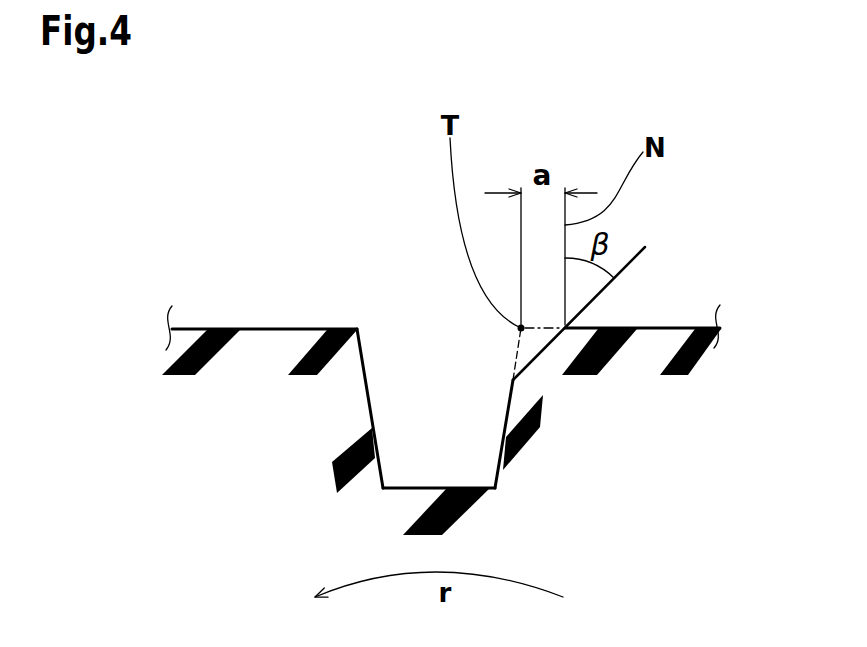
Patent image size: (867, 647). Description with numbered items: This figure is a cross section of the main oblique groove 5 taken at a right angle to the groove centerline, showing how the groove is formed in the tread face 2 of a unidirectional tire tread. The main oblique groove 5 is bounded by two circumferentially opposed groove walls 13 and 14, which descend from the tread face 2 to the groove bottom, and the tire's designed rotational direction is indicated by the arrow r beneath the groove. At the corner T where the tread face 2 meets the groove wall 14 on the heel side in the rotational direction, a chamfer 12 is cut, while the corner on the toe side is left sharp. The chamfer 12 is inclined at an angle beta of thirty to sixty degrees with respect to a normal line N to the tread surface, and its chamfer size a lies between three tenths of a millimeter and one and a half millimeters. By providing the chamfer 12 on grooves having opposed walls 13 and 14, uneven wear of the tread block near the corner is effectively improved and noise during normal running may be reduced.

The tread face 2 is at (668, 323).
The main oblique groove 5 is at (402, 358).
The chamfer 12 is at (533, 352).
The groove wall 13 is at (500, 378).
The groove wall 14 is at (380, 377).